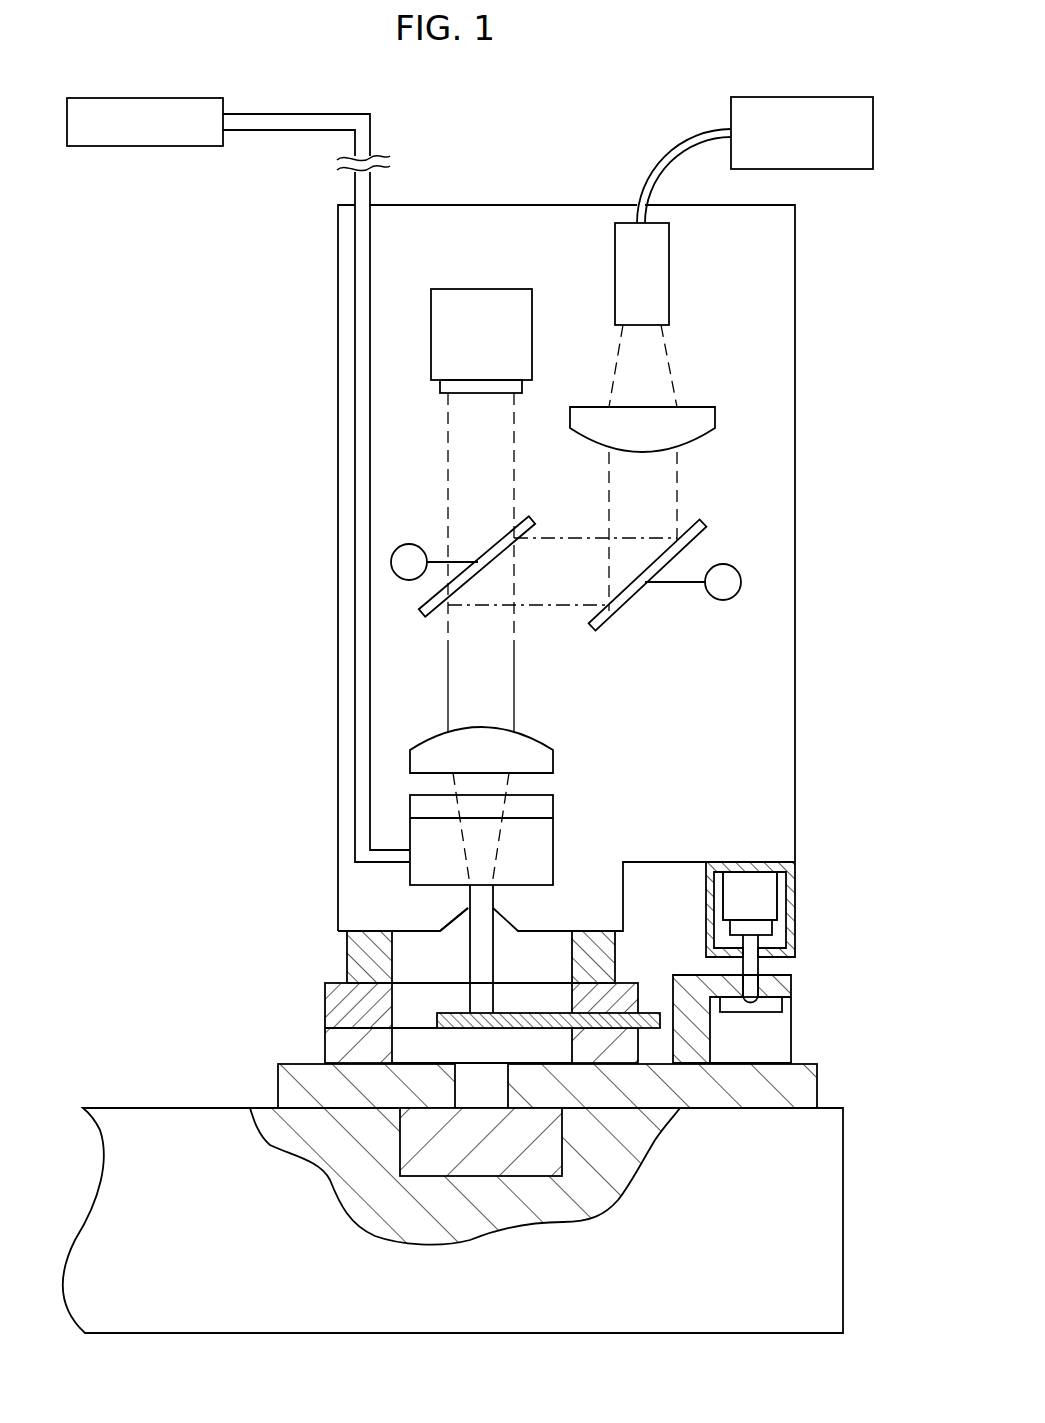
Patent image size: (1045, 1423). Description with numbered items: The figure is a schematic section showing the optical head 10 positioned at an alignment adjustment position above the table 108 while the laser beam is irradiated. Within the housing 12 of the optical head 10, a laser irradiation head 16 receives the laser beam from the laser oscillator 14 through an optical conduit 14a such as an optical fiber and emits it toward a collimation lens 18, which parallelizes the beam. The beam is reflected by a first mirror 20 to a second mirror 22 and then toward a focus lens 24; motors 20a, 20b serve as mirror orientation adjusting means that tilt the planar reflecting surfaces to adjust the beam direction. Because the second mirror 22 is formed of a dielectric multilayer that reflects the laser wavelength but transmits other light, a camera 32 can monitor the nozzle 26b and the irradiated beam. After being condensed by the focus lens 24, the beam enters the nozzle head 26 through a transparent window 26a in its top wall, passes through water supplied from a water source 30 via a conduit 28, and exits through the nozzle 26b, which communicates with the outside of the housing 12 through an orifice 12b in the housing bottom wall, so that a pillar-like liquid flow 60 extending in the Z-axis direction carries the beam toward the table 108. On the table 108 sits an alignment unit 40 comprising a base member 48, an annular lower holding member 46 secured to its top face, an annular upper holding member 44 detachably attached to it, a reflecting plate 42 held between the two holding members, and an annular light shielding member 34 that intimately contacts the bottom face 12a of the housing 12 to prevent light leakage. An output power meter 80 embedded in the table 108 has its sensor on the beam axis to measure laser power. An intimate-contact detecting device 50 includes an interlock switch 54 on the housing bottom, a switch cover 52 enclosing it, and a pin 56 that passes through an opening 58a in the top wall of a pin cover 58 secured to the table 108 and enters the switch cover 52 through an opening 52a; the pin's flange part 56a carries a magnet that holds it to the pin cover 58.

The optical head 10 is at (538, 150).
The housing 12 is at (338, 360).
The bottom face 12a is at (347, 943).
The orifice 12b is at (445, 930).
The laser oscillator 14 is at (843, 172).
The optical conduit 14a is at (668, 152).
The laser irradiation head 16 is at (670, 283).
The collimation lens 18 is at (715, 413).
The first mirror 20 is at (700, 522).
The motor 20a is at (741, 577).
The motor 20b is at (391, 562).
The second mirror 22 is at (480, 548).
The focus lens 24 is at (553, 763).
The nozzle head 26 is at (553, 843).
The window 26a is at (553, 808).
The nozzle 26b is at (480, 895).
The conduit 28 is at (376, 478).
The water source 30 is at (105, 148).
The camera 32 is at (497, 289).
The light shielding member 34 is at (347, 970).
The alignment unit 40 is at (217, 1000).
The reflecting plate 42 is at (650, 1013).
The upper holding member 44 is at (325, 1010).
The lower holding member 46 is at (325, 1045).
The base member 48 is at (278, 1080).
The intimate-contact detecting device 50 is at (829, 806).
The switch cover 52 is at (795, 925).
The opening 52a is at (760, 937).
The interlock switch 54 is at (750, 880).
The pin 56 is at (750, 965).
The flange part 56a is at (745, 1007).
The pin cover 58 is at (695, 990).
The opening 58a is at (750, 1000).
The pillar-like liquid flow 60 is at (493, 957).
The output power meter 80 is at (507, 1157).
The table 108 is at (822, 1150).